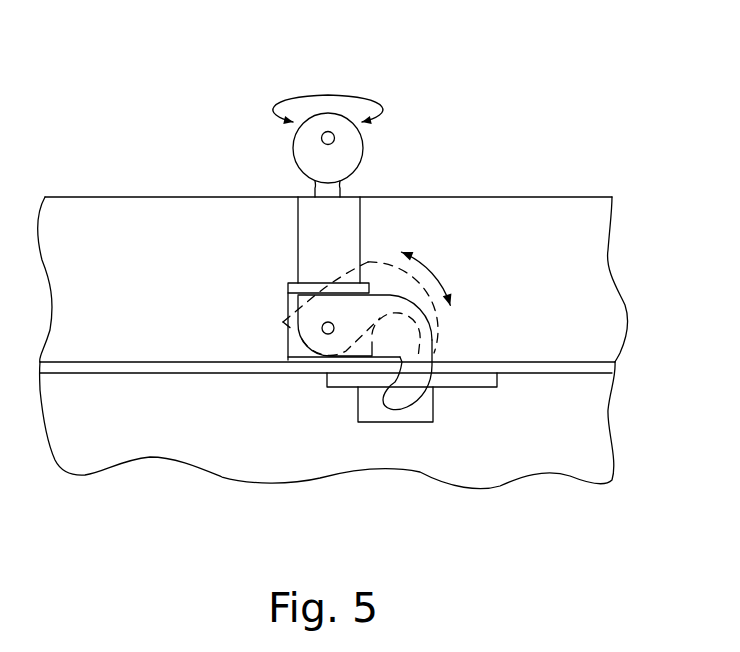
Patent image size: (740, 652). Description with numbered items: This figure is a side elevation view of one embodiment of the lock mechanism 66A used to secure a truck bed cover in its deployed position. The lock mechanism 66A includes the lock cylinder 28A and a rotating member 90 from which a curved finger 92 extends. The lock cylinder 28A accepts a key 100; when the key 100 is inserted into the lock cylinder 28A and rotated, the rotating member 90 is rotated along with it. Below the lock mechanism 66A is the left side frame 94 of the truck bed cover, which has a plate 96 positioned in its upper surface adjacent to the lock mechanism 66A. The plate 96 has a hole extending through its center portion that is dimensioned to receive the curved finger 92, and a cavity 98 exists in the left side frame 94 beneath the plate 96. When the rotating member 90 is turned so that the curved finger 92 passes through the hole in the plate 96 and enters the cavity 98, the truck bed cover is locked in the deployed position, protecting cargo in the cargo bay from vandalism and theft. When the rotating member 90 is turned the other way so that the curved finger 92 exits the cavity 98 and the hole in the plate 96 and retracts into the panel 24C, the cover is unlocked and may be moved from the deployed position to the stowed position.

The lock mechanism 66A is at (432, 90).
The key 100 is at (366, 150).
The lock cylinder 28A is at (298, 242).
The panel 24C is at (563, 291).
The rotating member 90 is at (375, 324).
The left side frame 94 is at (570, 446).
The curved finger 92 is at (398, 397).
The plate 96 is at (338, 388).
The cavity 98 is at (403, 422).